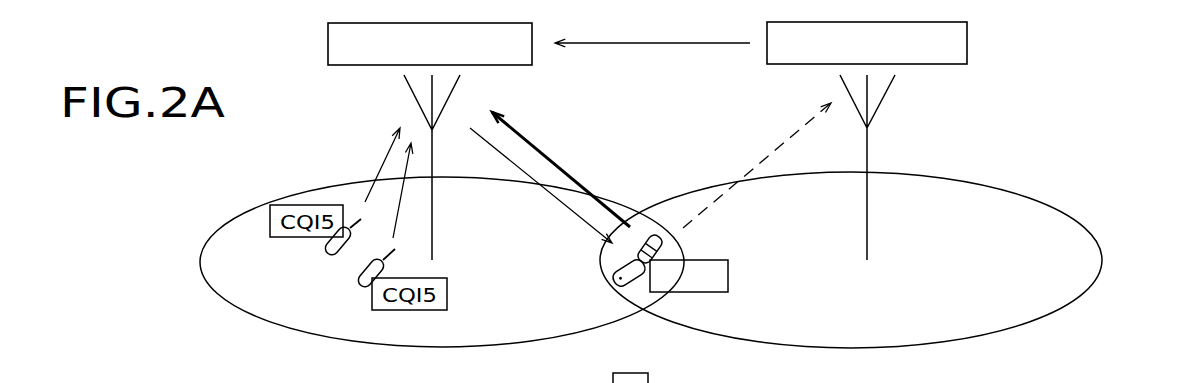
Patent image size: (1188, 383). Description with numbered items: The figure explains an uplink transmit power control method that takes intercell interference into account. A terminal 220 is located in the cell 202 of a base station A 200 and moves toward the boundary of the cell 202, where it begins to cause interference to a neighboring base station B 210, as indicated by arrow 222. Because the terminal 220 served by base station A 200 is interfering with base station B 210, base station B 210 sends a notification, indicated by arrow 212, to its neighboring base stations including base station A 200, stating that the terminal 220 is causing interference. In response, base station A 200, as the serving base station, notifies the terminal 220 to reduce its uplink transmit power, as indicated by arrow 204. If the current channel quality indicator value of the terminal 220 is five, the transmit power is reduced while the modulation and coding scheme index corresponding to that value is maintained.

The base station A 200 is at (532, 31).
The base station B 210 is at (967, 31).
The arrow indicating notification 212 is at (690, 43).
The cell 202 is at (297, 192).
The arrow indicating power reduction notification 204 is at (568, 208).
The terminal 220 is at (634, 288).
The arrow indicating interference 222 is at (752, 165).